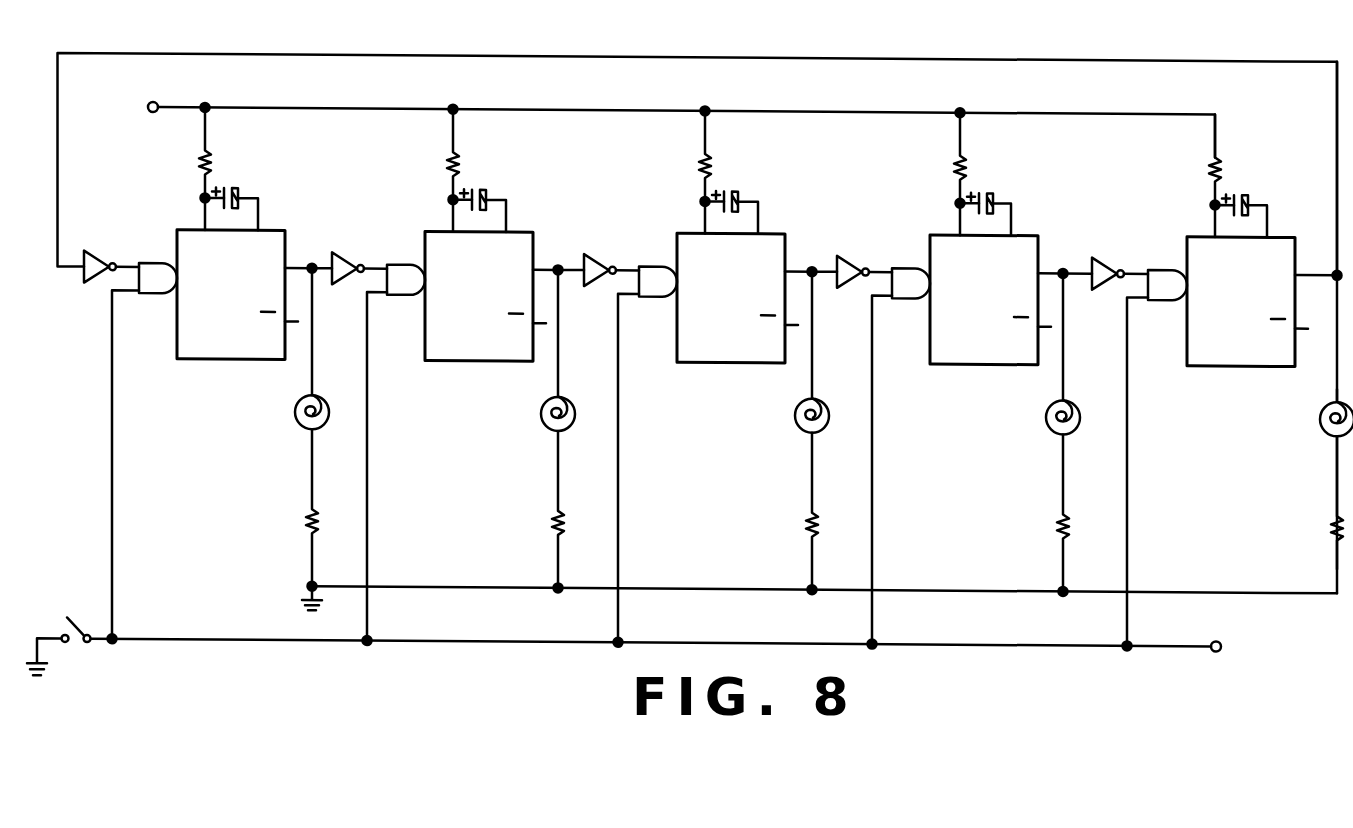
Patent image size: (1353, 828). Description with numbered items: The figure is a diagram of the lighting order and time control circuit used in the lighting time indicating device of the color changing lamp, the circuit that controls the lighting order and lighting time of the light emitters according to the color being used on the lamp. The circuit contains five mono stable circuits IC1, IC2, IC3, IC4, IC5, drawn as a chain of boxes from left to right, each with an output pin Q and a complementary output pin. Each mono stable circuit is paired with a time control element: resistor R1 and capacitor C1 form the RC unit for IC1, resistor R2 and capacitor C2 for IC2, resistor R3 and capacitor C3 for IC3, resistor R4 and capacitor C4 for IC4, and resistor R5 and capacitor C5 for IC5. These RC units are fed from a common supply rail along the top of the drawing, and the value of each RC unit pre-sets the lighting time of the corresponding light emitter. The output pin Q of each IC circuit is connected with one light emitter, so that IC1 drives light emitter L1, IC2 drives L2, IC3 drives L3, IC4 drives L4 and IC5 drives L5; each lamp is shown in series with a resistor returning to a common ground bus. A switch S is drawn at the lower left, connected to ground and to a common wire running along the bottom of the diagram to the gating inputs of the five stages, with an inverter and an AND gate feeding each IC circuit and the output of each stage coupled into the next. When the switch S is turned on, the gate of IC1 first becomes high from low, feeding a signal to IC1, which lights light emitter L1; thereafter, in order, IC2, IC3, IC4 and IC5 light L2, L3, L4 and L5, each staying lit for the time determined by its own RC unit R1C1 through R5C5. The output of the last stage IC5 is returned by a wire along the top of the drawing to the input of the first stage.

The resistor of first time control element R1 is at (225, 152).
The resistor of second time control element R2 is at (433, 154).
The resistor of third time control element R3 is at (684, 156).
The resistor of fourth time control element R4 is at (938, 157).
The resistor of fifth time control element R5 is at (1194, 159).
The capacitor of first time control element C1 is at (234, 201).
The capacitor of second time control element C2 is at (478, 201).
The capacitor of third time control element C3 is at (730, 203).
The capacitor of fourth time control element C4 is at (984, 205).
The capacitor of fifth time control element C5 is at (1239, 206).
The first mono stable circuit IC1 is at (247, 295).
The second mono stable circuit IC2 is at (494, 296).
The third mono stable circuit IC3 is at (747, 298).
The fourth mono stable circuit IC4 is at (999, 300).
The fifth mono stable circuit IC5 is at (1262, 302).
The light emitter L1 is at (327, 427).
The light emitter L2 is at (573, 429).
The light emitter L3 is at (827, 431).
The light emitter L4 is at (1078, 432).
The light emitter L5 is at (1320, 479).
The switch S is at (59, 646).